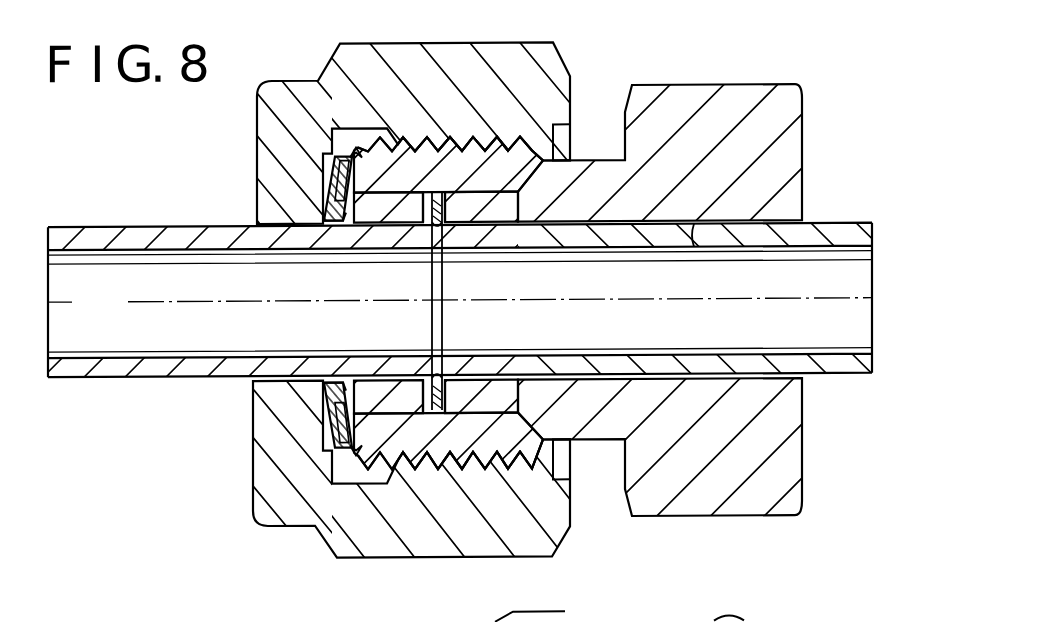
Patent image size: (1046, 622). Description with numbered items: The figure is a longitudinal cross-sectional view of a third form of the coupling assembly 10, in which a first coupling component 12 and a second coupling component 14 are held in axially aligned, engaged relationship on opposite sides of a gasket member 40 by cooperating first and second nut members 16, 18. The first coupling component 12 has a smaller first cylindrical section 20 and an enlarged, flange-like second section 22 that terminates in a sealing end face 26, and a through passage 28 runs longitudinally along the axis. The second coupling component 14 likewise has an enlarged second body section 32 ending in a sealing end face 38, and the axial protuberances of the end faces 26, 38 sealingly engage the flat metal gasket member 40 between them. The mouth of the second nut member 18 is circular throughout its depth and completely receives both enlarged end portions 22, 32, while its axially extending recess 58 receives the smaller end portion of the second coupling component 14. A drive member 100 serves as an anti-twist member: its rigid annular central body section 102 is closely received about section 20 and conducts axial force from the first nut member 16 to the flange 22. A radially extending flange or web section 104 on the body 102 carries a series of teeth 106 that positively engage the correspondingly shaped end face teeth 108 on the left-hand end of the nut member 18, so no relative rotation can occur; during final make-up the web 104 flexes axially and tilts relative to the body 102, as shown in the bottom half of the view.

The coupling assembly 10 is at (523, 311).
The first coupling component 12 is at (523, 311).
The second coupling component 14 is at (613, 310).
The first coupling nut member 16 is at (304, 535).
The second coupling nut member 18 is at (769, 533).
The first cylindrical section 20 is at (130, 228).
The second cylindrical section 22 is at (383, 398).
The second end face 26 is at (462, 236).
The through passage 28 is at (460, 299).
The second body section 32 is at (482, 395).
The end face 38 is at (424, 385).
The gasket member 40 is at (444, 321).
The axially extending recess 58 is at (694, 248).
The drive member 100 is at (343, 386).
The annular central body section 102 is at (334, 222).
The flange or web section 104 is at (350, 172).
The teeth 106 is at (350, 165).
The end face teeth 108 is at (345, 150).